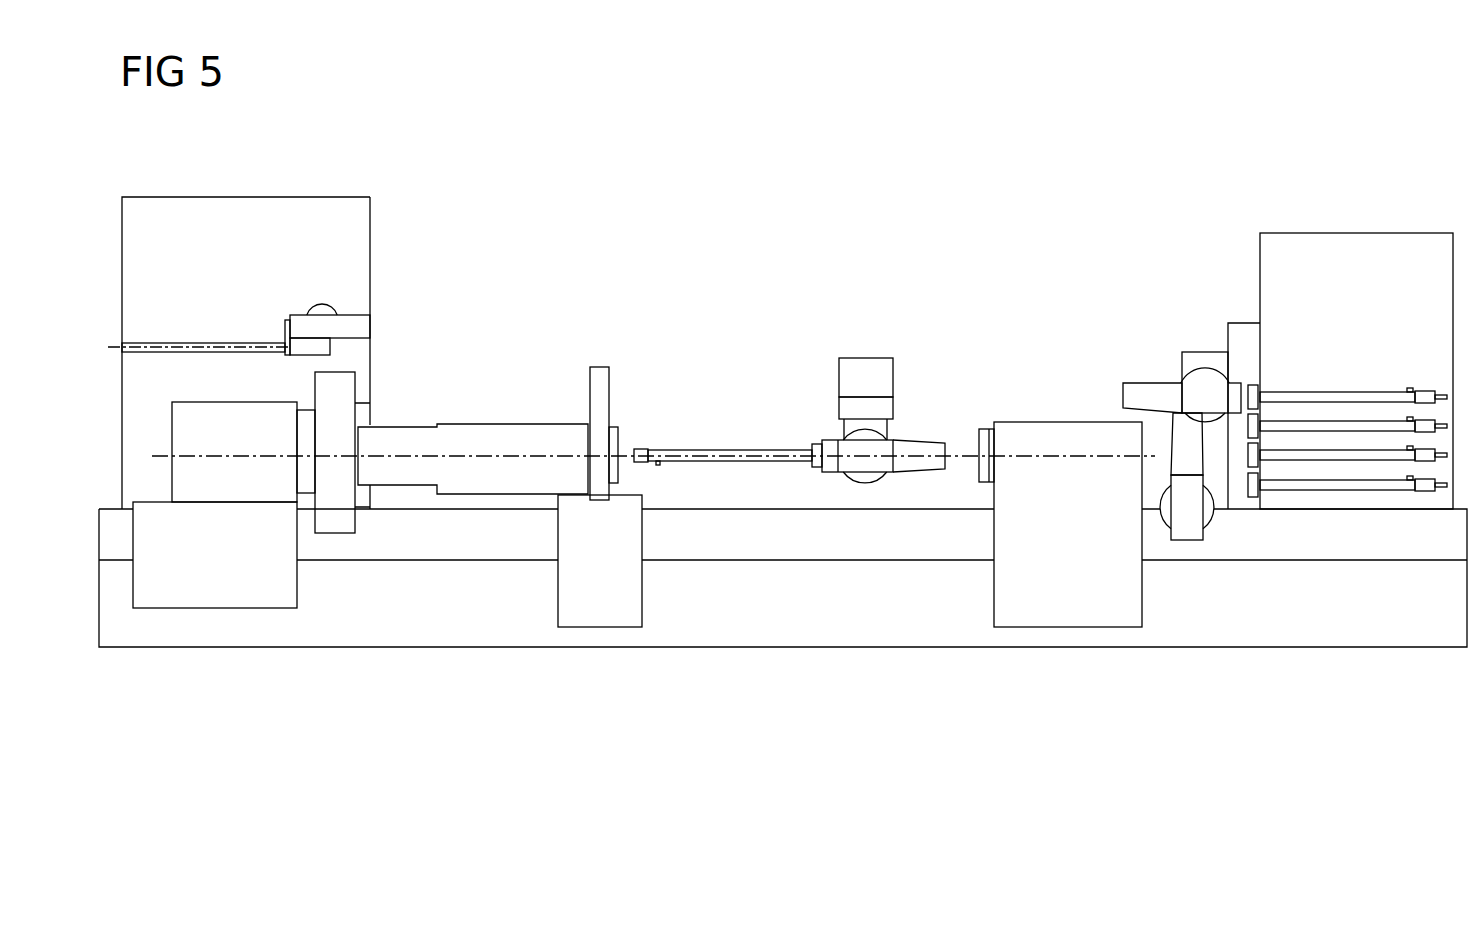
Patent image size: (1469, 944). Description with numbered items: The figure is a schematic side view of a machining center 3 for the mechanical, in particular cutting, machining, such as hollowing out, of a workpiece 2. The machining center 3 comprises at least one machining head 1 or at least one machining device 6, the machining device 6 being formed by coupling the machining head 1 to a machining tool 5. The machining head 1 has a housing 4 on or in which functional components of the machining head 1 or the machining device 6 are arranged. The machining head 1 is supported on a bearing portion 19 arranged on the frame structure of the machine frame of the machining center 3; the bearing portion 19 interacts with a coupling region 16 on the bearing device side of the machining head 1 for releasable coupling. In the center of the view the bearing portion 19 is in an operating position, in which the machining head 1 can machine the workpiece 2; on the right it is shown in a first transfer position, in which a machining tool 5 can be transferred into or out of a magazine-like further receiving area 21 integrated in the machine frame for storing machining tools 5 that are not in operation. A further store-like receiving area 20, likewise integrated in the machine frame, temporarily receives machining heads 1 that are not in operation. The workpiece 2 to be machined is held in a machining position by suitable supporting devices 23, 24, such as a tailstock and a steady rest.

The machining head 1 is at (350, 300).
The workpiece 2 is at (413, 432).
The machining center 3 is at (975, 265).
The housing 4 is at (925, 415).
The machining tool 5 is at (203, 330).
The machining device 6 is at (763, 395).
The coupling region 16 is at (893, 400).
The bearing portion 19 is at (857, 368).
The receiving area 20 is at (300, 222).
The further receiving area 21 is at (1245, 250).
The supporting device 23 is at (600, 375).
The supporting device 24 is at (345, 385).